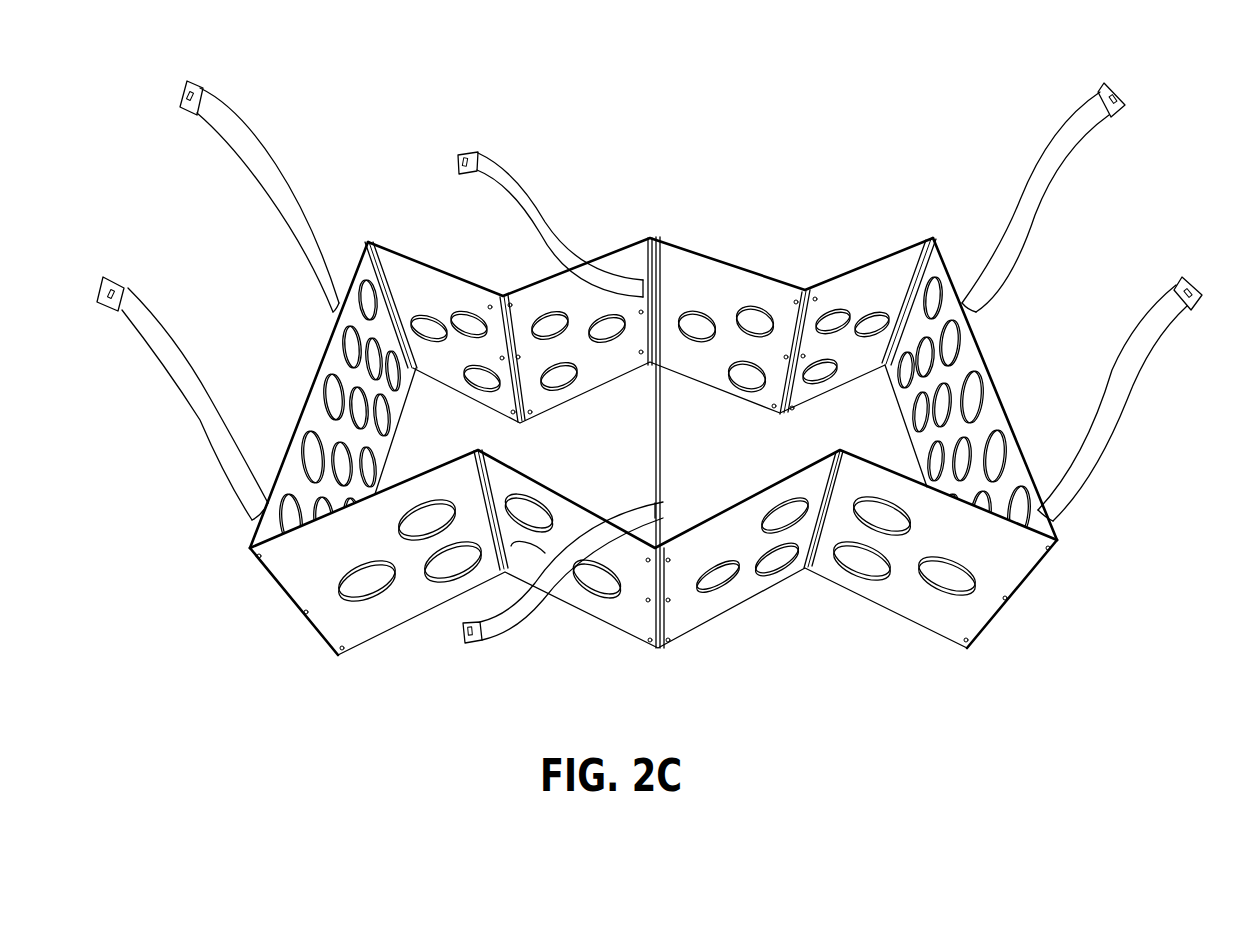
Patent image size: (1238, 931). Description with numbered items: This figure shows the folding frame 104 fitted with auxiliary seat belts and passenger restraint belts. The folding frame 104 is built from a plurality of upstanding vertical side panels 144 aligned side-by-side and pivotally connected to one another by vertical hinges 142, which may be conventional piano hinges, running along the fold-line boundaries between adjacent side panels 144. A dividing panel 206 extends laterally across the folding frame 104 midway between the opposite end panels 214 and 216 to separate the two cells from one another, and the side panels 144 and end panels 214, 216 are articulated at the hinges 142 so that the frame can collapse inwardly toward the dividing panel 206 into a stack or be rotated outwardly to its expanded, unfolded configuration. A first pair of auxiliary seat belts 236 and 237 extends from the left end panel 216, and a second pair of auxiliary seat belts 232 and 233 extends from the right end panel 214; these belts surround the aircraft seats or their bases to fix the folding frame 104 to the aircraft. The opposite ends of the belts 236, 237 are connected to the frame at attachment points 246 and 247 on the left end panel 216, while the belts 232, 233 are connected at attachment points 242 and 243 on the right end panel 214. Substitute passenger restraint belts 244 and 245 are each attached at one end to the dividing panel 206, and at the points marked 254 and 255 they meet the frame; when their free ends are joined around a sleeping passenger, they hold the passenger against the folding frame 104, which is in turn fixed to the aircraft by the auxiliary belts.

The folding frame 104 is at (729, 203).
The vertical hinges 142 is at (658, 258).
The side panels 144 is at (740, 287).
The dividing panel 206 is at (673, 543).
The end panel 214 is at (1007, 402).
The end panel 216 is at (292, 431).
The auxiliary seat belt 232 is at (1132, 386).
The auxiliary seat belt 233 is at (1052, 190).
The auxiliary seat belt 236 is at (177, 385).
The auxiliary seat belt 237 is at (283, 204).
The attachment point 242 is at (1057, 519).
The attachment point 243 is at (975, 320).
The passenger restraint belt 244 is at (525, 607).
The passenger restraint belt 245 is at (517, 182).
The attachment point 246 is at (257, 518).
The attachment point 247 is at (334, 321).
The strap attachment point 254 is at (653, 498).
The strap attachment point 255 is at (648, 303).